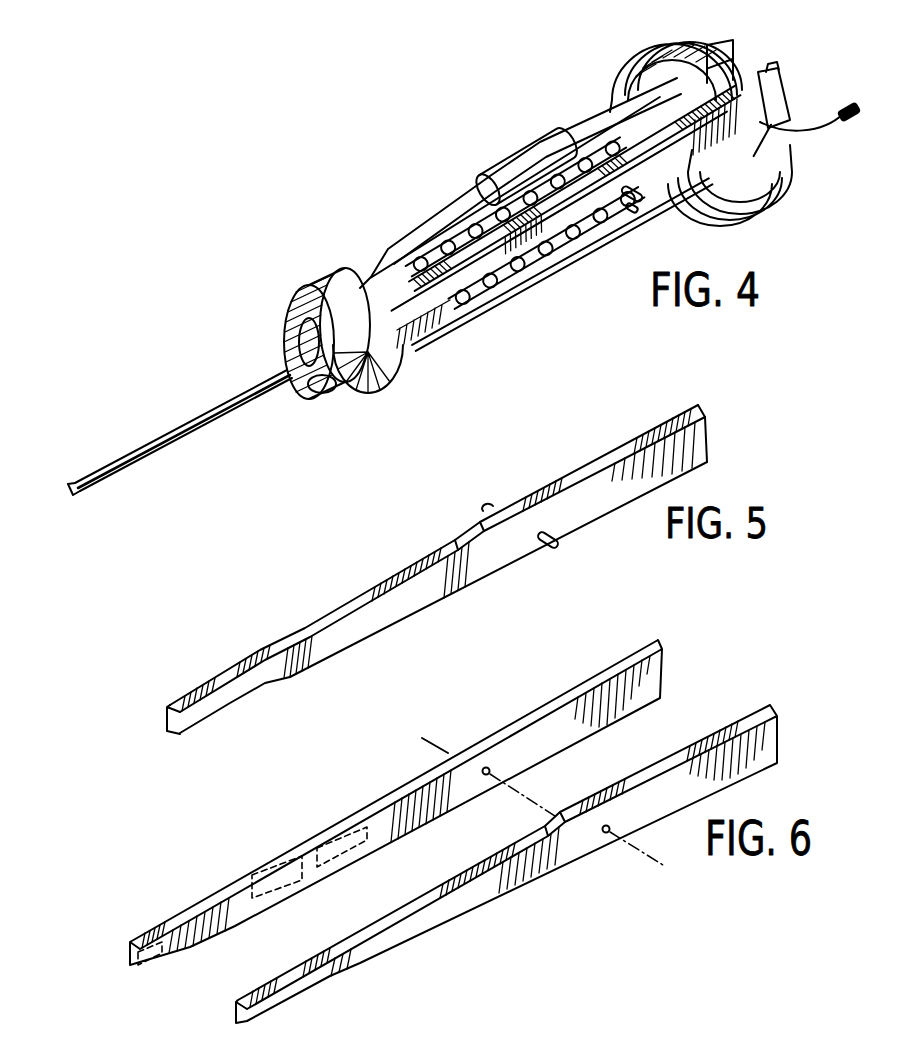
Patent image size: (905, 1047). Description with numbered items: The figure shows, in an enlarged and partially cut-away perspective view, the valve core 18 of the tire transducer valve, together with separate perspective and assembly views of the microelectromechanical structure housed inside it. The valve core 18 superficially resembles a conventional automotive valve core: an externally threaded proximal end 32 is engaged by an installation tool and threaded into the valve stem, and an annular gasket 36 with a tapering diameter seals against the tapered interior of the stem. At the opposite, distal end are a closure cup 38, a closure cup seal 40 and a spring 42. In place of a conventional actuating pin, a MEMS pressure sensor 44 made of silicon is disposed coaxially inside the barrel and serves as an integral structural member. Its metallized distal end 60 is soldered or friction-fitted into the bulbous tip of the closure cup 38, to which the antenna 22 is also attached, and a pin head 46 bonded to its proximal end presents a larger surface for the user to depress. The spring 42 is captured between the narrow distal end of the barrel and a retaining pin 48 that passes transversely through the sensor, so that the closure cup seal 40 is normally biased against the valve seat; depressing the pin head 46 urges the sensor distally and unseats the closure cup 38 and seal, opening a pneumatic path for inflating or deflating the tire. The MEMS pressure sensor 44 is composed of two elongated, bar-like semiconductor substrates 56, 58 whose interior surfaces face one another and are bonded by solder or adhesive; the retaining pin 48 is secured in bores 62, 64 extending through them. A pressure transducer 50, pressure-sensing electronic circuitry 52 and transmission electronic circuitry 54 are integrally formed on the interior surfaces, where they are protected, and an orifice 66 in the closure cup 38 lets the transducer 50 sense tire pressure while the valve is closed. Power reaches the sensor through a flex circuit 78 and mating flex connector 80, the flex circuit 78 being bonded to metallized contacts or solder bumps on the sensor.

In FIG. 4, the valve core 18 is at (400, 193).
In FIG. 4, the antenna 22 is at (187, 421).
In FIG. 4, the proximal end 32 is at (660, 55).
In FIG. 4, the gasket 36 is at (515, 158).
In FIG. 4, the closure cup 38 is at (316, 283).
In FIG. 4, the closure cup seal 40 is at (405, 351).
In FIG. 4, the spring 42 is at (520, 284).
In FIG. 4, the MEMS pressure sensor 44 is at (720, 150).
In FIG. 5, the MEMS pressure sensor 44 is at (419, 594).
In FIG. 4, the pin head 46 is at (776, 66).
In FIG. 4, the retaining pin 48 is at (660, 206).
In FIG. 5, the retaining pin 48 is at (551, 551).
In FIG. 6, the pressure transducer 50 is at (147, 960).
In FIG. 6, the pressure-sensing electronic circuitry 52 is at (340, 834).
In FIG. 6, the transmission electronic circuitry 54 is at (268, 866).
In FIG. 5, the substrate 56 is at (425, 596).
In FIG. 6, the substrate 56 is at (506, 864).
In FIG. 5, the substrate 58 is at (370, 586).
In FIG. 6, the substrate 58 is at (396, 828).
In FIG. 5, the distal end 60 is at (168, 731).
In FIG. 6, the bore 62 is at (486, 767).
In FIG. 6, the bore 64 is at (606, 836).
In FIG. 4, the orifice 66 is at (330, 392).
In FIG. 4, the flex circuit 78 is at (827, 133).
In FIG. 4, the flex connector 80 is at (850, 106).